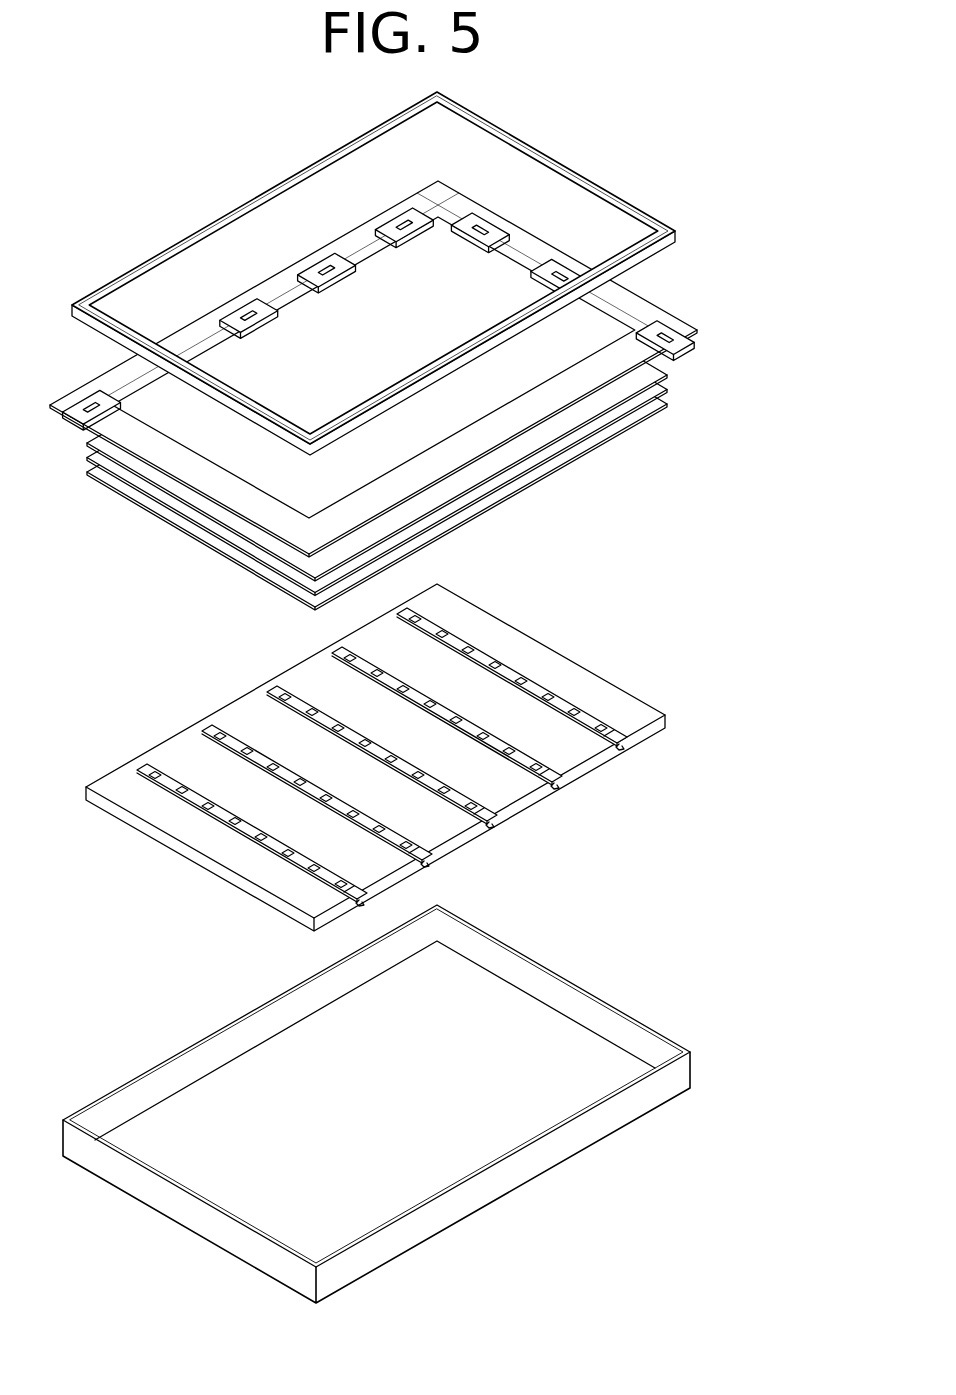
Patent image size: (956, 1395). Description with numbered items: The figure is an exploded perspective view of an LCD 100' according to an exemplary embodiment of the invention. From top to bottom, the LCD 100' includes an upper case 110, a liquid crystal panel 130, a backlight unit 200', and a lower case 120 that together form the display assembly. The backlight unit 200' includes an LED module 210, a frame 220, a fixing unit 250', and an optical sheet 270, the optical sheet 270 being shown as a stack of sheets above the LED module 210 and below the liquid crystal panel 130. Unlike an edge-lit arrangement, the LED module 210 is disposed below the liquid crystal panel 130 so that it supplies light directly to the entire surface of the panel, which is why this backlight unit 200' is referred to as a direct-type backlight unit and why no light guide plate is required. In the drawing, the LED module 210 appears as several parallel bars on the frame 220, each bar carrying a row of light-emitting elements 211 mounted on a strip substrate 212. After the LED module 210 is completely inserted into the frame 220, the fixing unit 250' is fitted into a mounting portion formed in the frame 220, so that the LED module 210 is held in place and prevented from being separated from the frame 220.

The LCD 100' is at (432, 697).
The upper case 110 is at (560, 165).
The lower case 120 is at (509, 1182).
The liquid crystal panel 130 is at (666, 298).
The backlight unit 200' is at (450, 585).
The LED module 210 is at (575, 599).
The light source (LED) 211 is at (493, 664).
The substrate (printed circuit board strip) 212 is at (533, 690).
The frame 220 is at (667, 715).
The fixing unit 250' is at (525, 818).
The optical sheet 270 is at (675, 377).